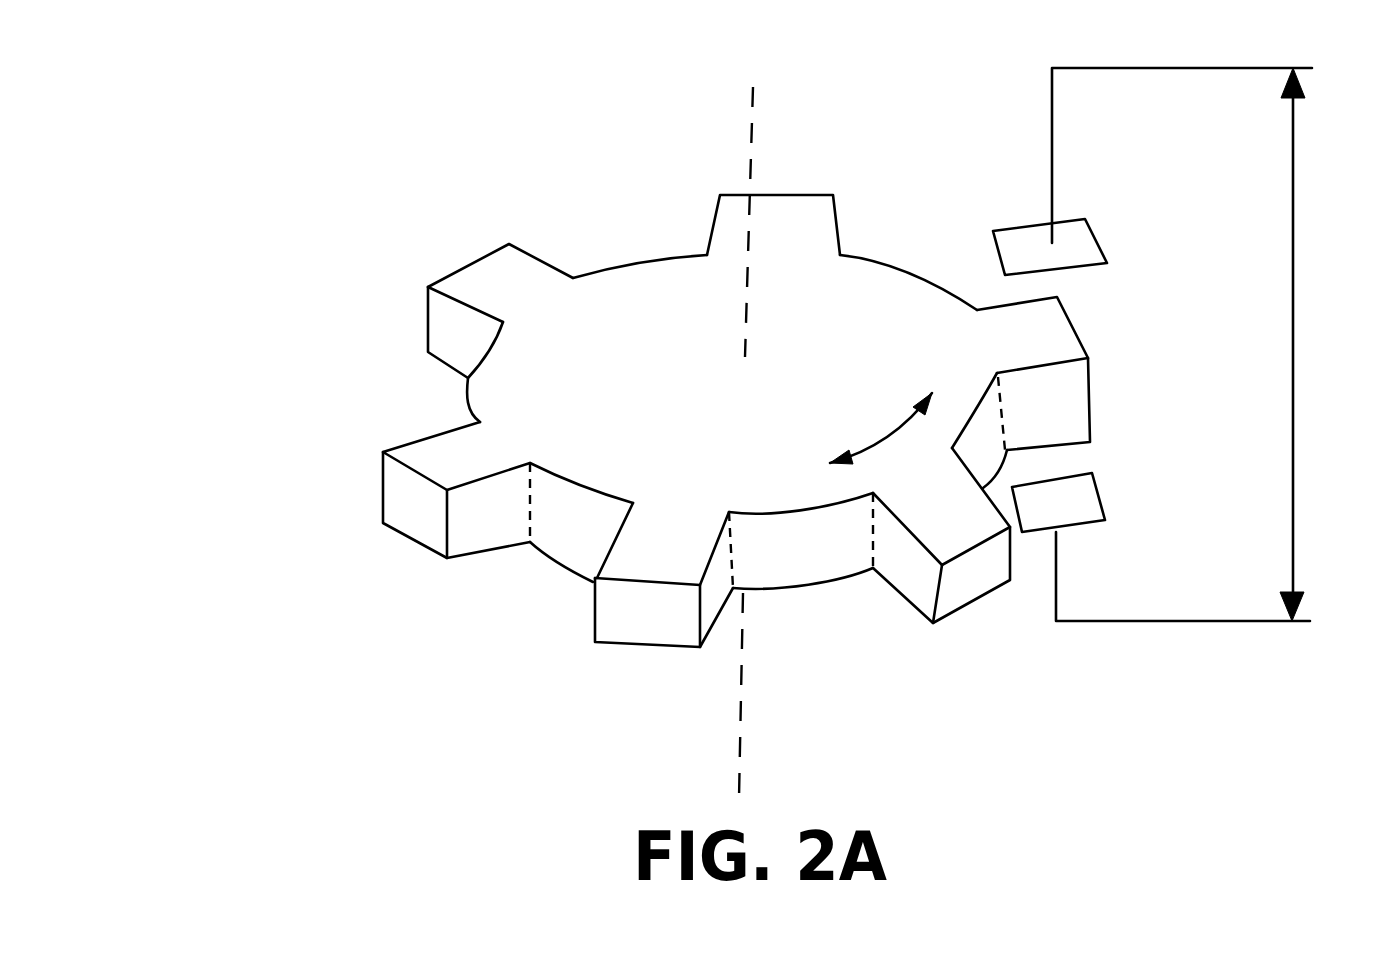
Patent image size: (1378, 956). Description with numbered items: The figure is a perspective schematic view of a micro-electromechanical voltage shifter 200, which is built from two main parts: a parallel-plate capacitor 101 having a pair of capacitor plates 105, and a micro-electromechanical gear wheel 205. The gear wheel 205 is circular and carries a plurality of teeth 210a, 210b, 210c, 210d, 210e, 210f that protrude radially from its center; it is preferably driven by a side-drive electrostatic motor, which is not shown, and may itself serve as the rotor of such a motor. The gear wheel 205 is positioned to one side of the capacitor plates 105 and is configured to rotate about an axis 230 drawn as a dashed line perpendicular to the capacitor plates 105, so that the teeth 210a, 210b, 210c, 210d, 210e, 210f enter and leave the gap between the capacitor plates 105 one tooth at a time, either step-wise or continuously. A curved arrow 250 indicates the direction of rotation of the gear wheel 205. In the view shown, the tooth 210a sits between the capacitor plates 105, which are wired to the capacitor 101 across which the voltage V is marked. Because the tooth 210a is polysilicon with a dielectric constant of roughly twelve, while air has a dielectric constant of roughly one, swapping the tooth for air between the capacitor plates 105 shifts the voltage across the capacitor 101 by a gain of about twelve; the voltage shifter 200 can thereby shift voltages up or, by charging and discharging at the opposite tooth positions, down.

The parallel-plate capacitor 101 is at (1173, 577).
The capacitor plates 105 is at (1073, 217).
The MEM voltage shifter 200 is at (163, 805).
The micro-electromechanical gear wheel 205 is at (430, 637).
The tooth 210a is at (1077, 327).
The tooth 210b is at (987, 594).
The tooth 210c is at (592, 603).
The tooth 210d is at (382, 487).
The tooth 210e is at (482, 257).
The tooth 210f is at (810, 195).
The axis 230 is at (753, 87).
The arrow 250 is at (888, 433).